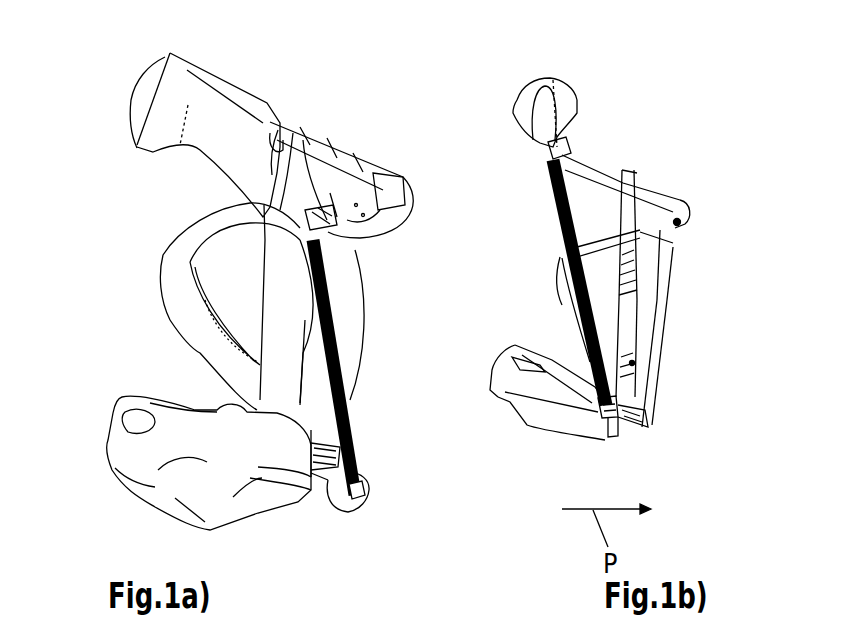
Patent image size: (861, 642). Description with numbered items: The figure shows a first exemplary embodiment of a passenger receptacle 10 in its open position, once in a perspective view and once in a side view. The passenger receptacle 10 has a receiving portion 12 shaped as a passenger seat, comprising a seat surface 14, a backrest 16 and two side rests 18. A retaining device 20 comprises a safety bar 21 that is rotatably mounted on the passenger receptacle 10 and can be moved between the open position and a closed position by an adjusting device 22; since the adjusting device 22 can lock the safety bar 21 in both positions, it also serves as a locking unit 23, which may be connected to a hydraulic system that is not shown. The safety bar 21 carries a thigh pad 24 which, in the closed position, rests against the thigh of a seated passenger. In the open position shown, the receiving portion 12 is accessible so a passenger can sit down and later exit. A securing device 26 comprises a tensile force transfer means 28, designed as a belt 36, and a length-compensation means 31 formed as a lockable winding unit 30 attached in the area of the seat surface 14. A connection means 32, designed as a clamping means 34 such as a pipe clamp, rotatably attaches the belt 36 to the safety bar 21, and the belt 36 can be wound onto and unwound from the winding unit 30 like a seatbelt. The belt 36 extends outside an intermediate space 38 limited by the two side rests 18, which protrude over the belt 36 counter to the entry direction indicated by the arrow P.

In FIG. 1A, the passenger receptacle 10 is at (85, 70).
In FIG. 1B, the passenger receptacle 10 is at (476, 66).
In FIG. 1A, the receiving portion 12 is at (220, 341).
In FIG. 1B, the receiving portion 12 is at (658, 328).
In FIG. 1A, the seat surface 14 is at (252, 451).
In FIG. 1B, the seat surface 14 is at (508, 390).
In FIG. 1A, the backrest 16 is at (277, 310).
In FIG. 1B, the backrest 16 is at (647, 332).
In FIG. 1A, the side rests 18 is at (177, 260).
In FIG. 1B, the side rests 18 is at (623, 217).
In FIG. 1A, the retaining device 20 is at (388, 187).
In FIG. 1B, the retaining device 20 is at (684, 187).
In FIG. 1A, the safety bar 21 is at (417, 163).
In FIG. 1B, the safety bar 21 is at (662, 205).
In FIG. 1A, the adjusting device 22 is at (336, 156).
In FIG. 1B, the adjusting device 22 is at (659, 180).
In FIG. 1A, the locking unit 23 is at (367, 168).
In FIG. 1B, the locking unit 23 is at (683, 200).
In FIG. 1A, the thigh pad 24 is at (230, 103).
In FIG. 1B, the thigh pad 24 is at (525, 148).
In FIG. 1A, the securing device 26 is at (448, 367).
In FIG. 1B, the securing device 26 is at (579, 282).
In FIG. 1A, the tensile force transfer means 28 is at (448, 367).
In FIG. 1B, the tensile force transfer means 28 is at (579, 282).
In FIG. 1A, the winding unit 30 is at (417, 503).
In FIG. 1B, the winding unit 30 is at (682, 421).
In FIG. 1A, the length-compensation means 31 is at (367, 500).
In FIG. 1B, the length-compensation means 31 is at (640, 412).
In FIG. 1A, the connection means 32 is at (395, 232).
In FIG. 1B, the connection means 32 is at (596, 114).
In FIG. 1A, the clamping means 34 is at (327, 228).
In FIG. 1B, the clamping means 34 is at (562, 145).
In FIG. 1A, the belt 36 is at (583, 338).
In FIG. 1B, the belt 36 is at (579, 282).
In FIG. 1A, the intermediate space 38 is at (256, 279).